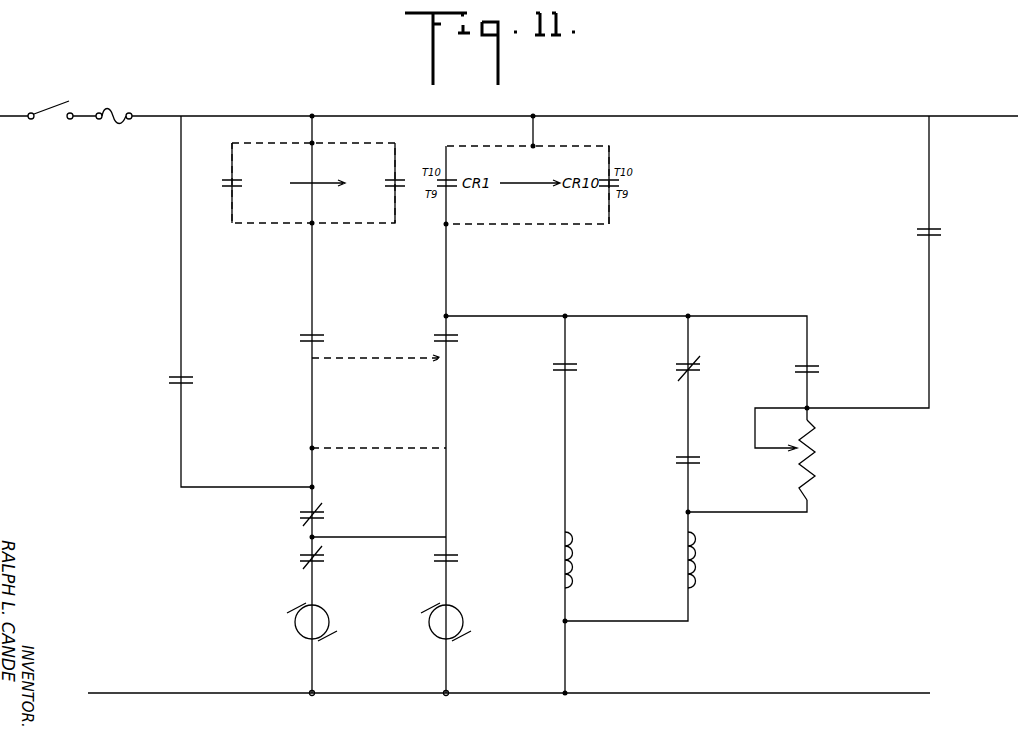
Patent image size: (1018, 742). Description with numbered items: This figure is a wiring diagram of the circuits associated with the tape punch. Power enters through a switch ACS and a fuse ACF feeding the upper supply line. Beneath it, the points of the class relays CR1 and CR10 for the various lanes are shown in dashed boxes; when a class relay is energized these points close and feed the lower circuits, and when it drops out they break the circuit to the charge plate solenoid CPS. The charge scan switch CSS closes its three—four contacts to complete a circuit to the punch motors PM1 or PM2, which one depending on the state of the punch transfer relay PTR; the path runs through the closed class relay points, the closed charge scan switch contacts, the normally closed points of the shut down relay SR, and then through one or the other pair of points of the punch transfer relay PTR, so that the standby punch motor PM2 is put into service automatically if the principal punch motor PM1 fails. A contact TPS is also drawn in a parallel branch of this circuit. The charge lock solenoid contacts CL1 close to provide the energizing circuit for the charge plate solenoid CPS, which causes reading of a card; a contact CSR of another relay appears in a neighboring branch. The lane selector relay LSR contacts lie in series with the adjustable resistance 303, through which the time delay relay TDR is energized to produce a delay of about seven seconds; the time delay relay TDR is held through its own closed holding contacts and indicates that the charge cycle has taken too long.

The AC power switch ACS is at (50, 99).
The AC fuse ACF is at (114, 103).
The class relay CR1 is at (300, 183).
The class relay CR10 is at (381, 183).
The charge scan switch CSS is at (408, 349).
The tape punch switch contact TPS is at (195, 384).
The shut down relay SR is at (321, 516).
The punch transfer relay PTR is at (393, 559).
The punch motor PM1 is at (280, 611).
The punch motor PM2 is at (485, 625).
The charge lock solenoid contacts CL1 is at (617, 367).
The card select relay contact CSR is at (672, 462).
The lane selector relay LSR is at (816, 371).
The adjustable resistance 303 is at (804, 454).
The charge plate solenoid CPS is at (550, 560).
The time delay relay TDR is at (833, 400).